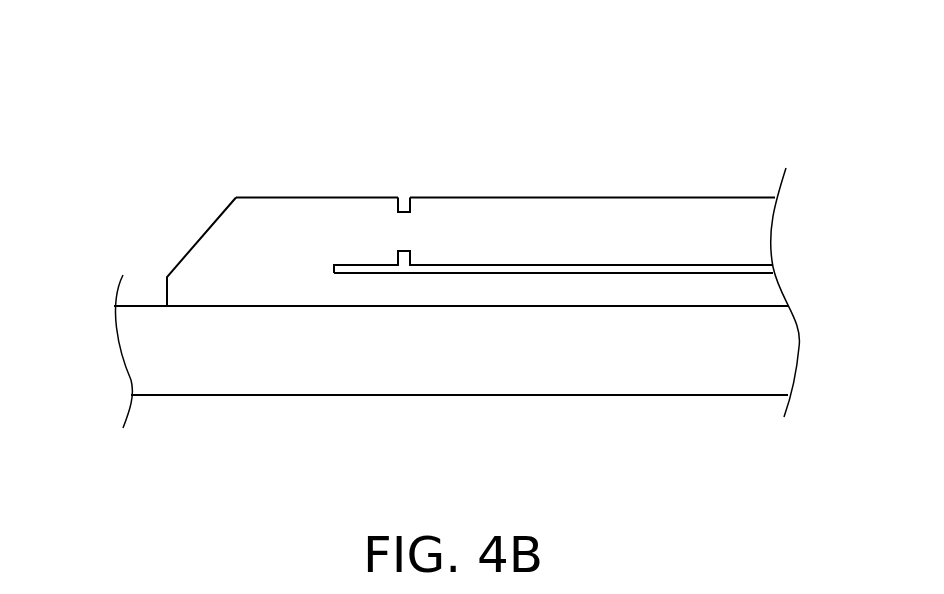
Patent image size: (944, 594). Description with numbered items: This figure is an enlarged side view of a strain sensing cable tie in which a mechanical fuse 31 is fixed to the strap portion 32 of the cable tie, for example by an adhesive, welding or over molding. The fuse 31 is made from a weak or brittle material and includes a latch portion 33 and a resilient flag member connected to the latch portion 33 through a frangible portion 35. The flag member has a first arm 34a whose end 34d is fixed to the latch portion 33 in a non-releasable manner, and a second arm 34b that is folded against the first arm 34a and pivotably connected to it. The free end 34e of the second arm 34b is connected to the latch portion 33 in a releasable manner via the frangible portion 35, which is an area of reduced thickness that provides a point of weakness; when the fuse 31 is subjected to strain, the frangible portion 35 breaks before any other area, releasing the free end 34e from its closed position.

The mechanical fuse 31 is at (608, 112).
The strap portion 32 is at (732, 380).
The latch portion 33 is at (222, 213).
The first arm 34a is at (537, 290).
The second arm 34b is at (705, 212).
The end of the first arm 34d is at (365, 290).
The free end 34e is at (452, 212).
The frangible portion 35 is at (405, 206).